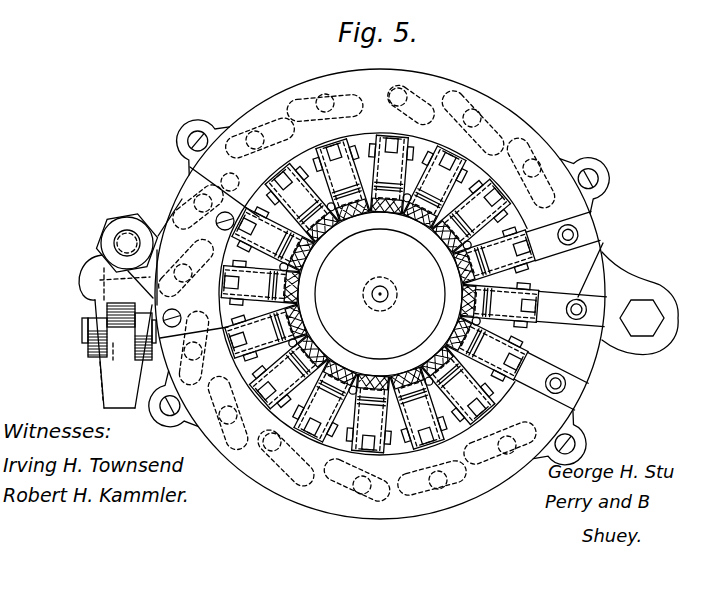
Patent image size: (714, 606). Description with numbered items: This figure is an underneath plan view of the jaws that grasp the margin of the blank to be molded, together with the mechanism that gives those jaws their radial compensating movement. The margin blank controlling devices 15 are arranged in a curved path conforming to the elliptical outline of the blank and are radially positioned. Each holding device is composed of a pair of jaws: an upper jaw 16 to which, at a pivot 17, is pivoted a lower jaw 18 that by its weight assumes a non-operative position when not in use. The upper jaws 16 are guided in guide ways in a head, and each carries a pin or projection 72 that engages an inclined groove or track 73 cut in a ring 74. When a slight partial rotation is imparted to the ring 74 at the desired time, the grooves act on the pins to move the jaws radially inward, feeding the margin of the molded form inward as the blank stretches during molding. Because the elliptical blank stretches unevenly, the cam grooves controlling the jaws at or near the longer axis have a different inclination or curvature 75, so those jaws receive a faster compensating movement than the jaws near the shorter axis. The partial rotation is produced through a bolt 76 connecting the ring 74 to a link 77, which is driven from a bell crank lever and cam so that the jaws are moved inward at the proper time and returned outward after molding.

The margin blank controlling devices 15 is at (603, 243).
The upper jaw 16 is at (570, 308).
The pivot 17 is at (521, 345).
The lower jaw 18 is at (487, 349).
The pin or projection 72 is at (330, 95).
The inclined groove or track 73 is at (175, 200).
The ring 74 is at (523, 125).
The inclination or curvature of cam grooves 75 is at (330, 101).
The bolt 76 is at (120, 243).
The link 77 is at (110, 383).